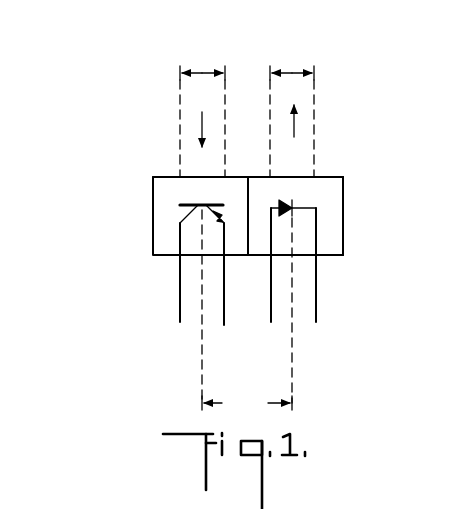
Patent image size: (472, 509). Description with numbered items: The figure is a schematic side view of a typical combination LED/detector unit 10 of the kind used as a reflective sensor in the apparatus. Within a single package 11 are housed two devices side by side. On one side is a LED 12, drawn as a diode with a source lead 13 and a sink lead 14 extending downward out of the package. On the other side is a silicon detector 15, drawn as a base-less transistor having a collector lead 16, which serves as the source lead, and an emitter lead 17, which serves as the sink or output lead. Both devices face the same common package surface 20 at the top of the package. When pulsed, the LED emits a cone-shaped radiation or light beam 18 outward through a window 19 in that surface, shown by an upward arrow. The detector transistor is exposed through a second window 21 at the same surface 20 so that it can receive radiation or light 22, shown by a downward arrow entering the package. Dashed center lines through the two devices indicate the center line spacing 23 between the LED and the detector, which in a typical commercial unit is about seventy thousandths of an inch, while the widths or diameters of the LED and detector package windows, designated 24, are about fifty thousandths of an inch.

The combination LED/detector unit 10 is at (107, 247).
The single package 11 is at (345, 211).
The LED 12 is at (333, 240).
The source lead 13 is at (270, 310).
The sink lead 14 is at (320, 297).
The silicon detector 15 is at (160, 212).
The collector lead 16 is at (176, 295).
The emitter lead 17 is at (227, 305).
The radiation or light beam 18 is at (294, 127).
The window 19 is at (313, 177).
The common package surface 20 is at (233, 176).
The window 21 is at (178, 176).
The radiation or light 22 is at (202, 127).
The center line spacing 23 is at (247, 403).
The window width 24 is at (201, 71).